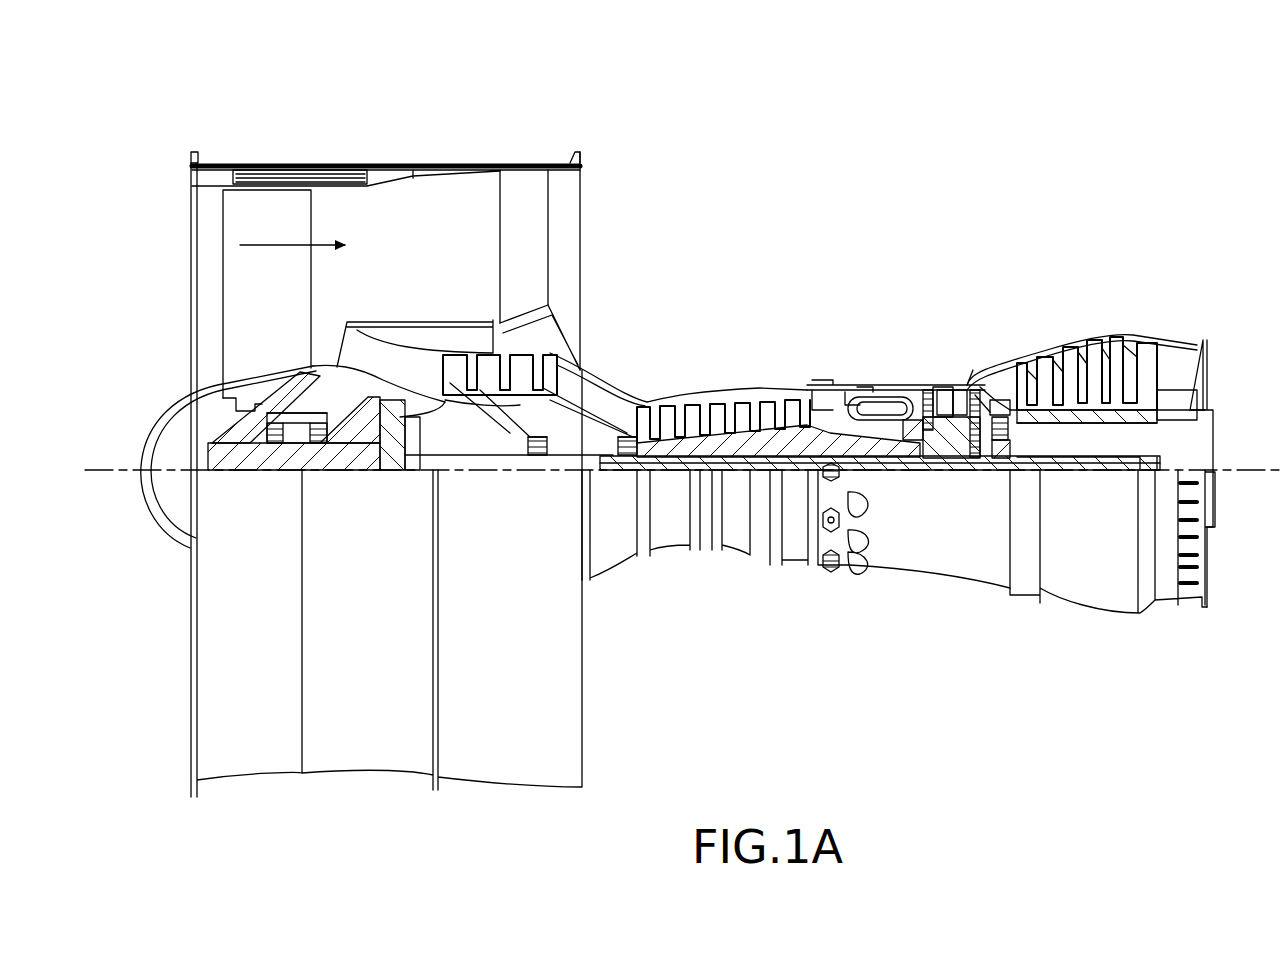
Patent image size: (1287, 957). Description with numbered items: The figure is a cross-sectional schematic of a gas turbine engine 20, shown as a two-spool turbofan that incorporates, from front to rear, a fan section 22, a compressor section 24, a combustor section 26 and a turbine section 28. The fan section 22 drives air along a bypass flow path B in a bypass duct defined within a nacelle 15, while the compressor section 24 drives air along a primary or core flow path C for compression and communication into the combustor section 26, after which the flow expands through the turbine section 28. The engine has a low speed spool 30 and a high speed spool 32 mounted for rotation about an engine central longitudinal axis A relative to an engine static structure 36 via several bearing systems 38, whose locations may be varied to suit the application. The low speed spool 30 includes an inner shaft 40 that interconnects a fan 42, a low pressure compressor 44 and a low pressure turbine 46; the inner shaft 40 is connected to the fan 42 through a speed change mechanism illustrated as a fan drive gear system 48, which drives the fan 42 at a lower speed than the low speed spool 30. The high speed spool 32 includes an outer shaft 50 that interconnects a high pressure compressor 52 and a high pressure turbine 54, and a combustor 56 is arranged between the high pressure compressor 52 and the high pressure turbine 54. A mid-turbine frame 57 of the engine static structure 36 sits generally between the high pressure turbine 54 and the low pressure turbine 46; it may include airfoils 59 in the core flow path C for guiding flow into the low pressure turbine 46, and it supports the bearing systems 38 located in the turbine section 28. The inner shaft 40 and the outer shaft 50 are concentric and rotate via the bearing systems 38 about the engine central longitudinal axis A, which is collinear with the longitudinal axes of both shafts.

The nacelle 15 is at (384, 178).
The gas turbine engine 20 is at (903, 180).
The fan section 22 is at (303, 146).
The compressor section 24 is at (628, 360).
The combustor section 26 is at (873, 340).
The turbine section 28 is at (1030, 310).
The low speed spool 30 is at (752, 498).
The high speed spool 32 is at (805, 425).
The engine static structure 36 is at (798, 543).
The bearing systems 38 is at (987, 443).
The inner shaft 40 is at (603, 470).
The fan 42 is at (277, 287).
The low pressure compressor 44 is at (510, 365).
The low pressure turbine 46 is at (1080, 352).
The fan drive gear system 48 is at (393, 470).
The outer shaft 50 is at (872, 455).
The high pressure compressor 52 is at (752, 398).
The high pressure turbine 54 is at (940, 395).
The combustor 56 is at (884, 405).
The mid-turbine frame 57 is at (990, 375).
The airfoils 59 is at (1000, 412).
The engine central longitudinal axis A is at (1268, 462).
The bypass flow path B is at (276, 245).
The core flow path C is at (368, 348).